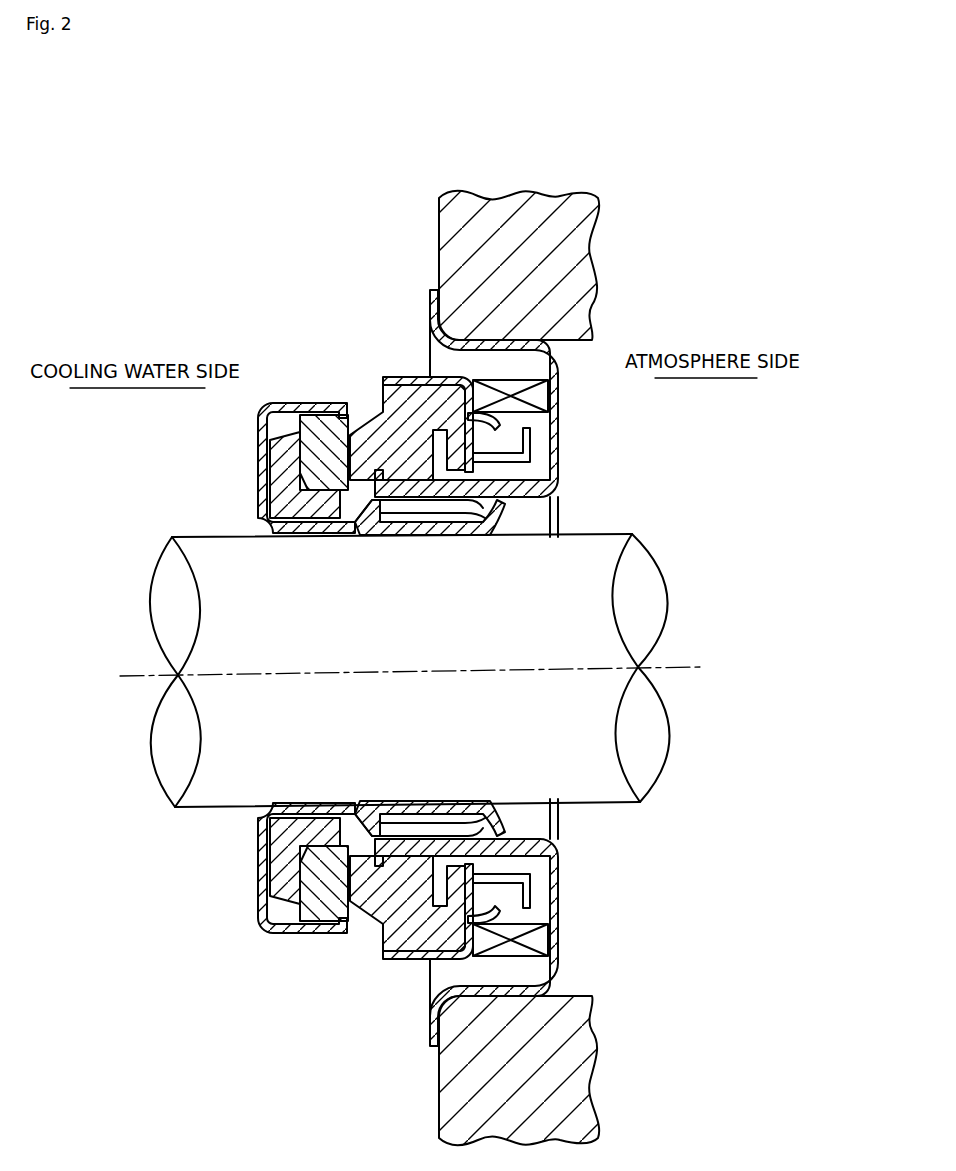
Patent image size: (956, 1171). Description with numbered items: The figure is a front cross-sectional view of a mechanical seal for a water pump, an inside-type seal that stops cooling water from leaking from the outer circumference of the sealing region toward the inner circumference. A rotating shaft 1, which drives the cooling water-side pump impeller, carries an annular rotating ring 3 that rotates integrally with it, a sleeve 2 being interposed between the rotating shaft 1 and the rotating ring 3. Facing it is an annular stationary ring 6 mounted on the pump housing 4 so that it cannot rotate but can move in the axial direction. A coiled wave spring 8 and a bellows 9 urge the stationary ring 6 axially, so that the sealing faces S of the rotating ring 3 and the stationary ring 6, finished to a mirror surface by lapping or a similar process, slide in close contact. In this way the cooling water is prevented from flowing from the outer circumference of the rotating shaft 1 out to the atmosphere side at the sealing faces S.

The rotating shaft 1 is at (310, 637).
The sleeve 2 is at (266, 465).
The rotating ring 3 is at (300, 420).
The pump housing 4 is at (512, 218).
The stationary ring 6 is at (383, 432).
The coiled wave spring 8 is at (540, 401).
The bellows 9 is at (425, 405).
The sealing faces S is at (365, 480).